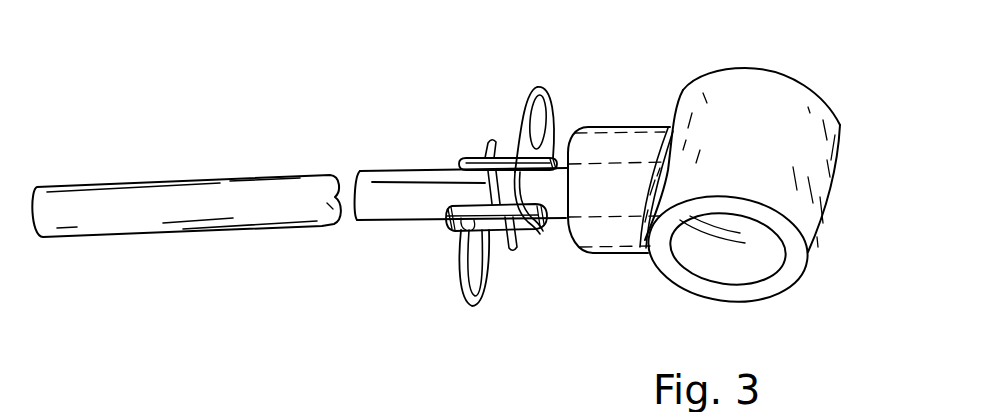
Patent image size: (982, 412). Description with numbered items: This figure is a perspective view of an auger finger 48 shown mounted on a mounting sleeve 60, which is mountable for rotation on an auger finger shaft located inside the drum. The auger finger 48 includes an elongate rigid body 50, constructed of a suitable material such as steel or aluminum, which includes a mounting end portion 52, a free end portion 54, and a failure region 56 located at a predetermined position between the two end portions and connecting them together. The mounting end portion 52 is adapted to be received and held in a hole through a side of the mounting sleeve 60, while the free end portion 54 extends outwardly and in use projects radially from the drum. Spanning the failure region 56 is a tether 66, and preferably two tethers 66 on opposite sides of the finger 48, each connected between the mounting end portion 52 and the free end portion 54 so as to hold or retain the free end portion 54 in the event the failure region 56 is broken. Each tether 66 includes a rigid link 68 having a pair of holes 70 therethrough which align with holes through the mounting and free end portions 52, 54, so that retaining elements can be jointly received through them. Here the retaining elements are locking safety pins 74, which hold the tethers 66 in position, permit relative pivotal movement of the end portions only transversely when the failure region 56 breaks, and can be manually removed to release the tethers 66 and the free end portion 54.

The auger finger 48 is at (127, 180).
The elongate rigid body 50 is at (262, 176).
The mounting end portion 52 is at (564, 222).
The free end portion 54 is at (146, 236).
The failure region 56 is at (406, 175).
The mounting sleeve 60 is at (808, 278).
The tether 66 is at (556, 153).
The rigid link 68 is at (470, 156).
The holes 70 is at (457, 233).
The locking safety pins 74 is at (457, 294).